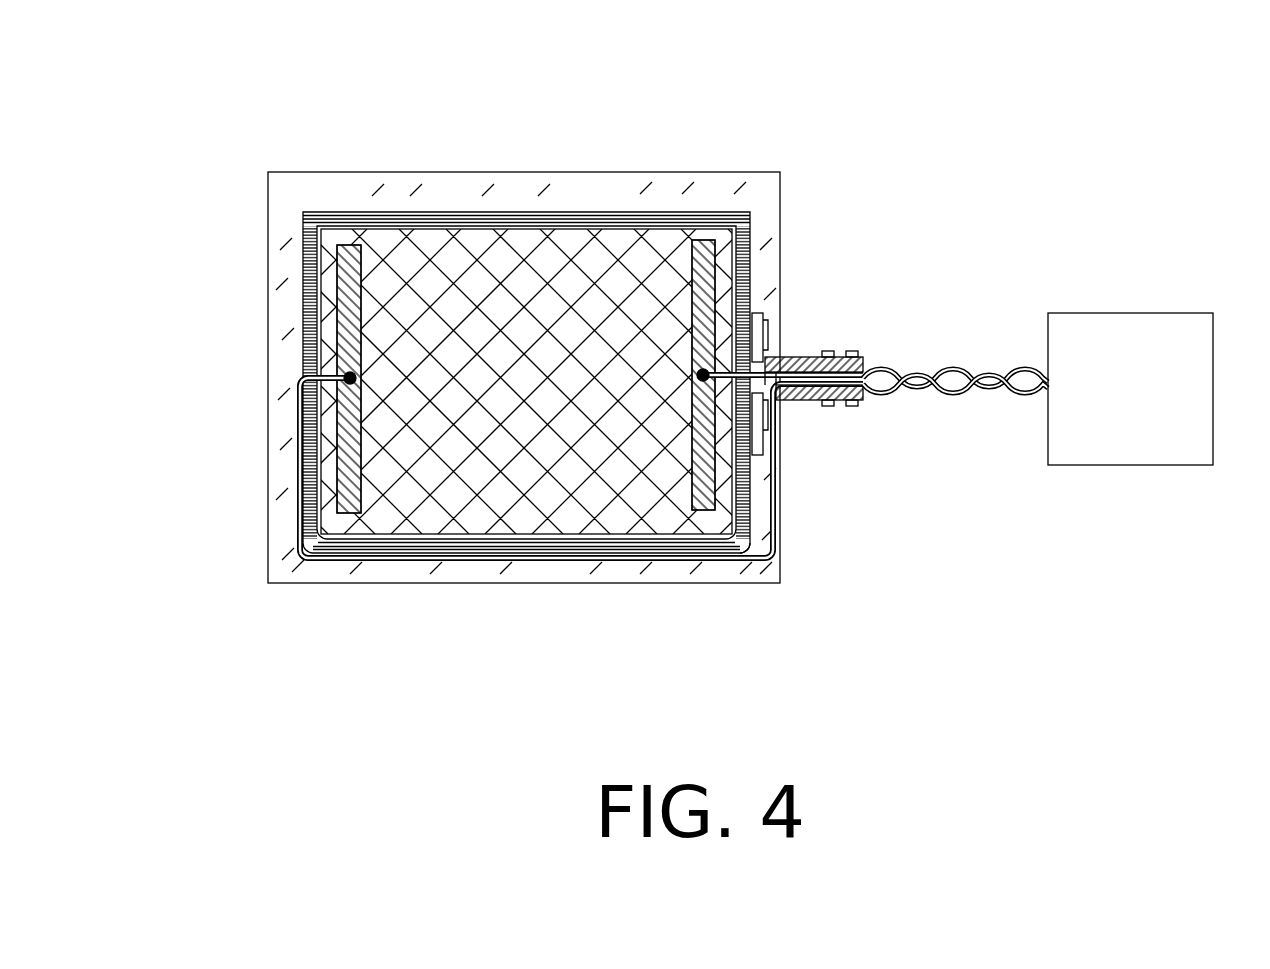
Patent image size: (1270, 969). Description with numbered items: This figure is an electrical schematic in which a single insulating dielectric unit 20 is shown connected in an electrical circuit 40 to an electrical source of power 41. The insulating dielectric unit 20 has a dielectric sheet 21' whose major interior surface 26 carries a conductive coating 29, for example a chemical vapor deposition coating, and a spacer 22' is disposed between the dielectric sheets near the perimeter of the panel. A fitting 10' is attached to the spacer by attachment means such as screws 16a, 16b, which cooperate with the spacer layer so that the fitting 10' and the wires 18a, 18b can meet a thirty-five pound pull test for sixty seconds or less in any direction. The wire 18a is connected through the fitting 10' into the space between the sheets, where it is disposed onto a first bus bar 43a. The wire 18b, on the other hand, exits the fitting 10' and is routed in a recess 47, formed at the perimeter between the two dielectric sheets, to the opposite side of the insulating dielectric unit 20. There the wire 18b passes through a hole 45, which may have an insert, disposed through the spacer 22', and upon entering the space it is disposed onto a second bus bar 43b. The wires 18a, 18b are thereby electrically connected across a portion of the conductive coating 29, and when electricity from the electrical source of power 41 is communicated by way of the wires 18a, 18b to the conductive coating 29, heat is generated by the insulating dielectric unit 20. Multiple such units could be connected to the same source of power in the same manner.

The fitting 10' is at (950, 283).
The screw 16a is at (762, 323).
The screw 16b is at (765, 435).
The wire 18a is at (730, 332).
The wire 18b is at (325, 375).
The insulating dielectric unit 20 is at (815, 94).
The dielectric sheet 21' is at (519, 391).
The spacer 22' is at (554, 360).
The major interior surface 26 is at (397, 224).
The conductive coating 29 is at (585, 255).
The electrical circuit 40 is at (1055, 183).
The electrical source of power 41 is at (1118, 450).
The first bus bar 43a is at (697, 245).
The second bus bar 43b is at (352, 512).
The hole 45 is at (300, 371).
The recess 47 is at (786, 551).